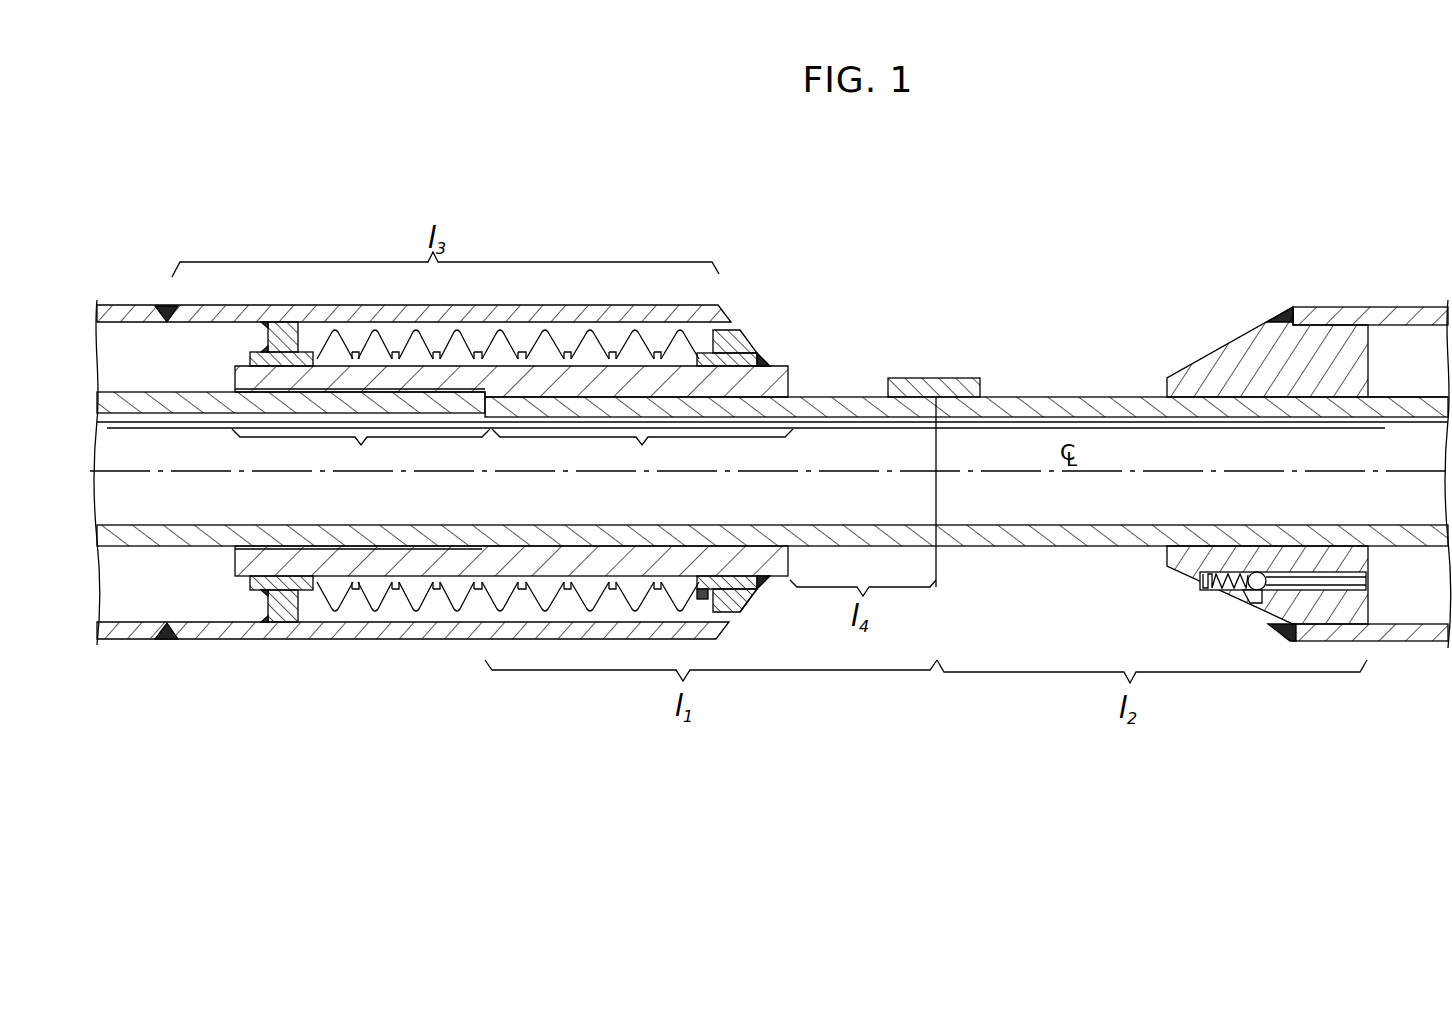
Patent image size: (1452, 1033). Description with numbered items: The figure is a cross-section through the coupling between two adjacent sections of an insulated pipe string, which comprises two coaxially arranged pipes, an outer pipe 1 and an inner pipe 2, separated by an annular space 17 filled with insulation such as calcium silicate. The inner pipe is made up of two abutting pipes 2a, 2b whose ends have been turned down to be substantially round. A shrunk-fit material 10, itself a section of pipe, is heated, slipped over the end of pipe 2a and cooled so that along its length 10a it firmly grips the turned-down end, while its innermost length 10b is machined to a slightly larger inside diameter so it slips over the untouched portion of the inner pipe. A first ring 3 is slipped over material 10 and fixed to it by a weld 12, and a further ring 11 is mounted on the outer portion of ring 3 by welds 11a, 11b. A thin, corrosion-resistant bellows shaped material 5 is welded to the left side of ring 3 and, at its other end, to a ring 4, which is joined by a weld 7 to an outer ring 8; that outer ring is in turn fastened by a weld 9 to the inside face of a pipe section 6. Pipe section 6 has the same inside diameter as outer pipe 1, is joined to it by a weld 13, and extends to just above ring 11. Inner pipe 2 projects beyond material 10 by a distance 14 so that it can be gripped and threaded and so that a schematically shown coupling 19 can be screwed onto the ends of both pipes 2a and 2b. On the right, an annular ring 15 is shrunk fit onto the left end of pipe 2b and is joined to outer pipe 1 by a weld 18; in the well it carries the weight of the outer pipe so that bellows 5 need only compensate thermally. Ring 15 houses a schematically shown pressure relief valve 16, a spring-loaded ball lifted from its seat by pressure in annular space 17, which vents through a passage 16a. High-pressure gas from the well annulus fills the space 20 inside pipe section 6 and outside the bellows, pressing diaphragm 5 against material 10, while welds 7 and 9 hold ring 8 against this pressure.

The outer pipe 1 is at (141, 304).
The inner pipe 2 is at (860, 404).
The pipe 2a is at (177, 400).
The pipe 2b is at (1293, 410).
The first ring 3 is at (735, 578).
The ring 4 is at (258, 353).
The bellows shaped material 5 is at (560, 338).
The pipe section 6 is at (462, 306).
The weld 7 is at (258, 598).
The outer ring 8 is at (287, 607).
The weld 9 is at (258, 616).
The material 10 is at (600, 556).
The length 10a is at (642, 448).
The length 10b is at (361, 448).
The ring 11 is at (740, 608).
The weld 11a is at (700, 593).
The weld 11b is at (748, 610).
The weld 12 is at (766, 586).
The weld 13 is at (167, 310).
The distance 14 is at (478, 546).
The annular ring 15 is at (1238, 349).
The pressure relief valve 16 is at (1248, 581).
The passage 16a is at (1255, 603).
The annular space 17 is at (122, 347).
The weld 18 is at (1285, 308).
The coupling 19 is at (970, 383).
The space 20 is at (700, 336).